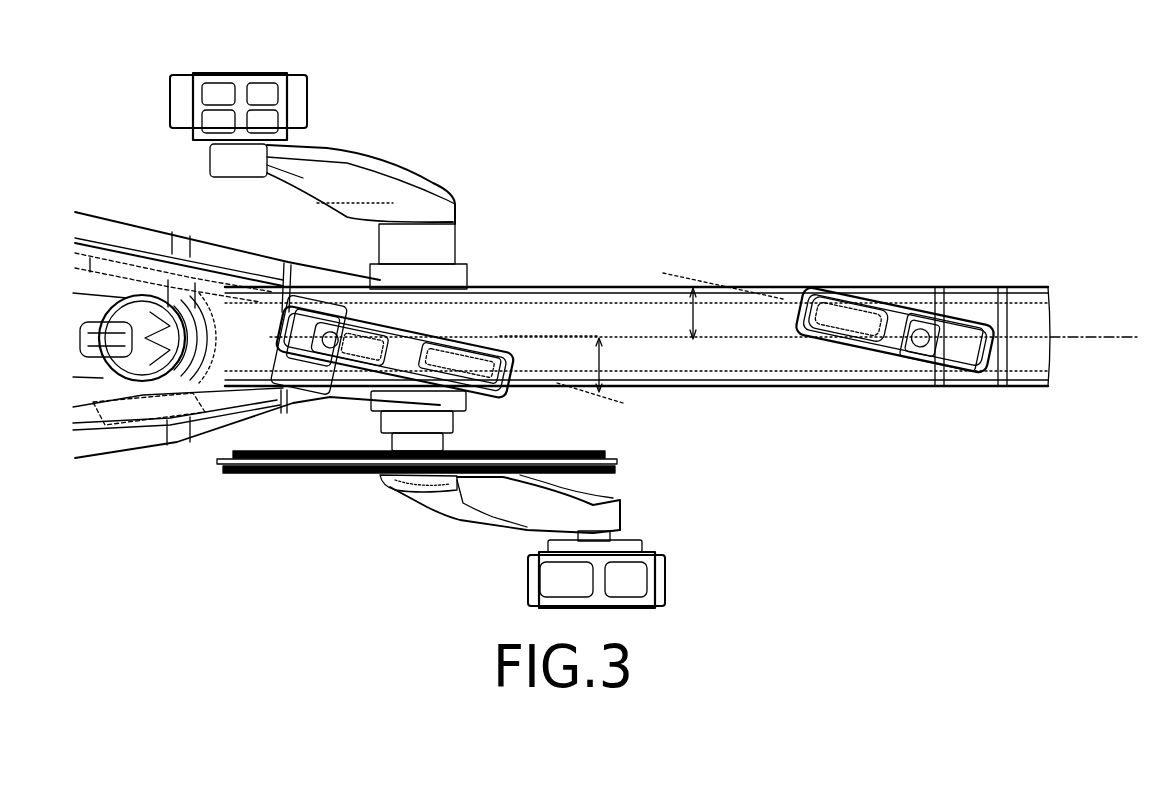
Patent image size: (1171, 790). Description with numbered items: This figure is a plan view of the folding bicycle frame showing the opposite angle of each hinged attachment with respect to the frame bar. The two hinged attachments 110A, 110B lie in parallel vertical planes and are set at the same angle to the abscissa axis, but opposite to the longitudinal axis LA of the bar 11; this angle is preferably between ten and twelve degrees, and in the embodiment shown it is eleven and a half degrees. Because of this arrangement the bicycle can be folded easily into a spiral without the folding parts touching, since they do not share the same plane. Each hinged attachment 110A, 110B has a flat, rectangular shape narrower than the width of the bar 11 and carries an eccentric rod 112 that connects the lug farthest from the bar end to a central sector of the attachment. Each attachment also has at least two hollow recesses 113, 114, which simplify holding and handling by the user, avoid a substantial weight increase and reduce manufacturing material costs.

The bar 11 is at (617, 317).
The hinged attachment 110A is at (397, 347).
The hinged attachment 110B is at (895, 313).
The eccentric rod 112 is at (377, 302).
The hollow recess 113 is at (371, 326).
The hollow recess 114 is at (470, 377).
The longitudinal axis LA is at (1095, 331).